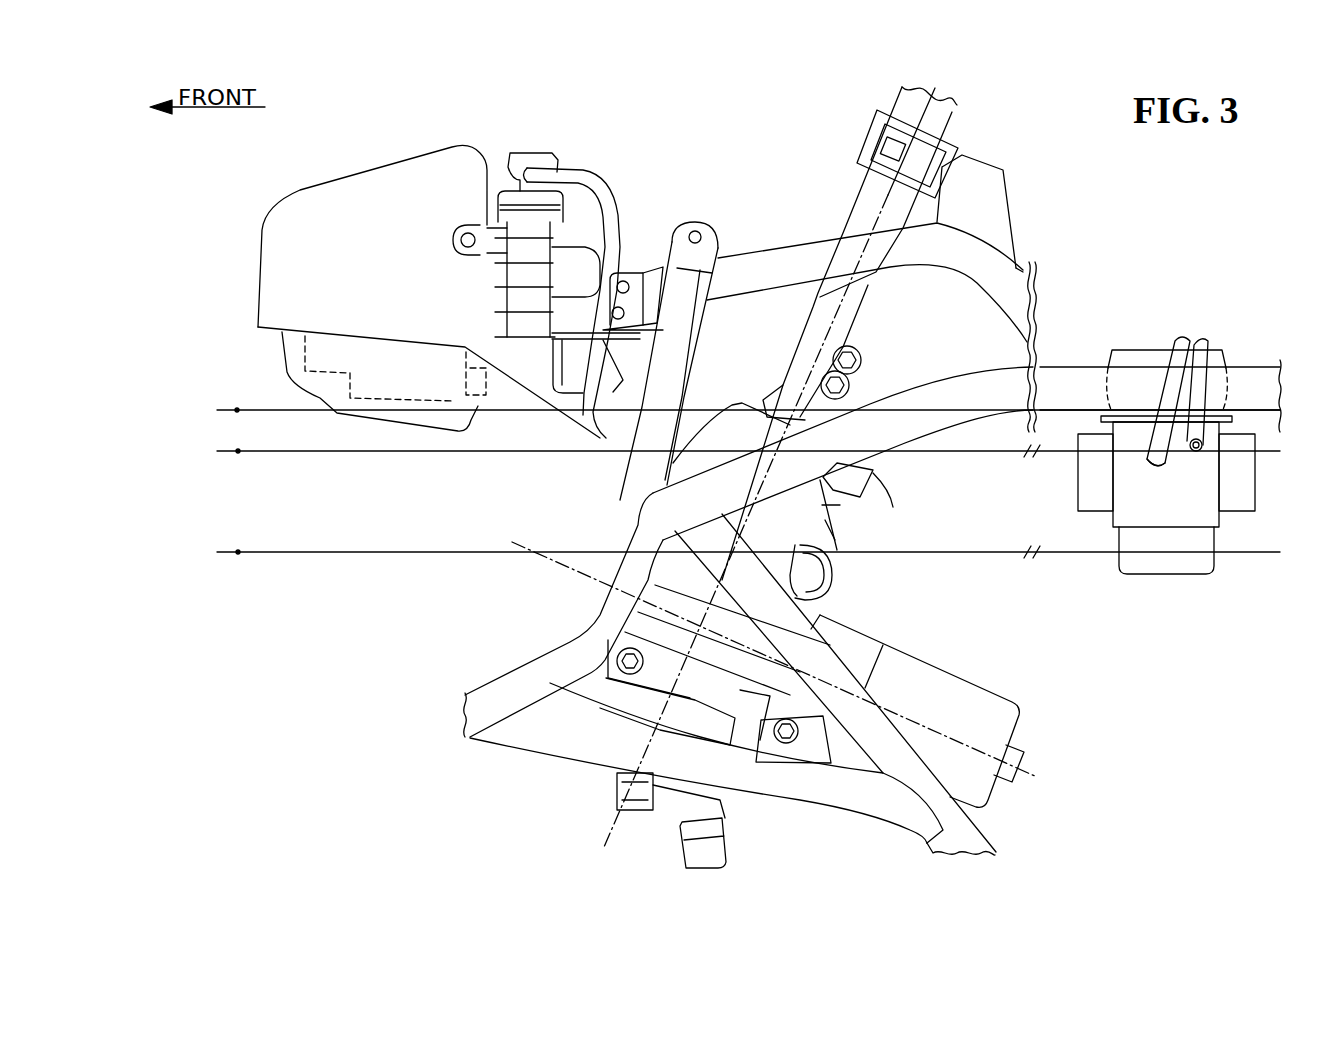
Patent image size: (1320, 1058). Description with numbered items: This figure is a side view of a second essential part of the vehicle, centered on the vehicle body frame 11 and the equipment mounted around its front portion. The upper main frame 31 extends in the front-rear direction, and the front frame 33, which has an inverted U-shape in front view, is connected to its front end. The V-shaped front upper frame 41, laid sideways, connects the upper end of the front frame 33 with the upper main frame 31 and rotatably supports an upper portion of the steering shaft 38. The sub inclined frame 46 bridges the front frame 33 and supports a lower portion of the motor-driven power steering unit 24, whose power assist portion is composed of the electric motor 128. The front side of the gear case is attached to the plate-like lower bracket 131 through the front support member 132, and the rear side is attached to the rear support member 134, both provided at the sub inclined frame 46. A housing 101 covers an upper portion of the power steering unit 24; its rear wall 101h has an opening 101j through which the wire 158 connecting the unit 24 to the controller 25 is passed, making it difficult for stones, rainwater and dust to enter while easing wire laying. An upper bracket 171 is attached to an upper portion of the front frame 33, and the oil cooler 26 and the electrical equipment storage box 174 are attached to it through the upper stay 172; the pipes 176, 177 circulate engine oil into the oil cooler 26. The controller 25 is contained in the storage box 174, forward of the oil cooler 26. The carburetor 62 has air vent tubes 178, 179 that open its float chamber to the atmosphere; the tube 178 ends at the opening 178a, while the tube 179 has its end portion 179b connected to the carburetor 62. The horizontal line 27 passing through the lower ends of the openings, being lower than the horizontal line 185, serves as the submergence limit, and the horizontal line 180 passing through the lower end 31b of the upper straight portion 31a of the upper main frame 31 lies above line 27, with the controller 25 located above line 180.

The vehicle body frame 11 is at (1022, 265).
The motor-driven power steering unit 24 is at (876, 630).
The controller 25 is at (302, 343).
The oil cooler 26 is at (528, 335).
The horizontal line 27 is at (238, 553).
The upper main frame 31 is at (903, 387).
The upper straight portion 31a is at (1000, 368).
The lower end 31b is at (998, 415).
The front frame 33 is at (532, 658).
The steering shaft 38 is at (868, 197).
The front upper frame 41 is at (776, 257).
The sub inclined frame 46 is at (859, 804).
The carburetor 62 is at (1219, 582).
The housing 101 is at (860, 495).
The rear wall 101h is at (822, 505).
The opening 101j is at (825, 520).
The electric motor 128 is at (993, 707).
The lower bracket 131 is at (612, 715).
The front support member 132 is at (560, 707).
The rear support member 134 is at (807, 753).
The wire 158 is at (833, 588).
The upper bracket 171 is at (672, 228).
The upper stay 172 is at (657, 280).
The electrical equipment storage box 174 is at (342, 178).
The pipe 176 is at (590, 387).
The pipe 177 is at (593, 427).
The air vent tube 178 is at (1182, 337).
The opening 178a is at (1198, 460).
The air vent tube 179 is at (1201, 338).
The end portion 179b is at (1158, 468).
The horizontal line 180 is at (236, 410).
The horizontal line 185 is at (238, 451).